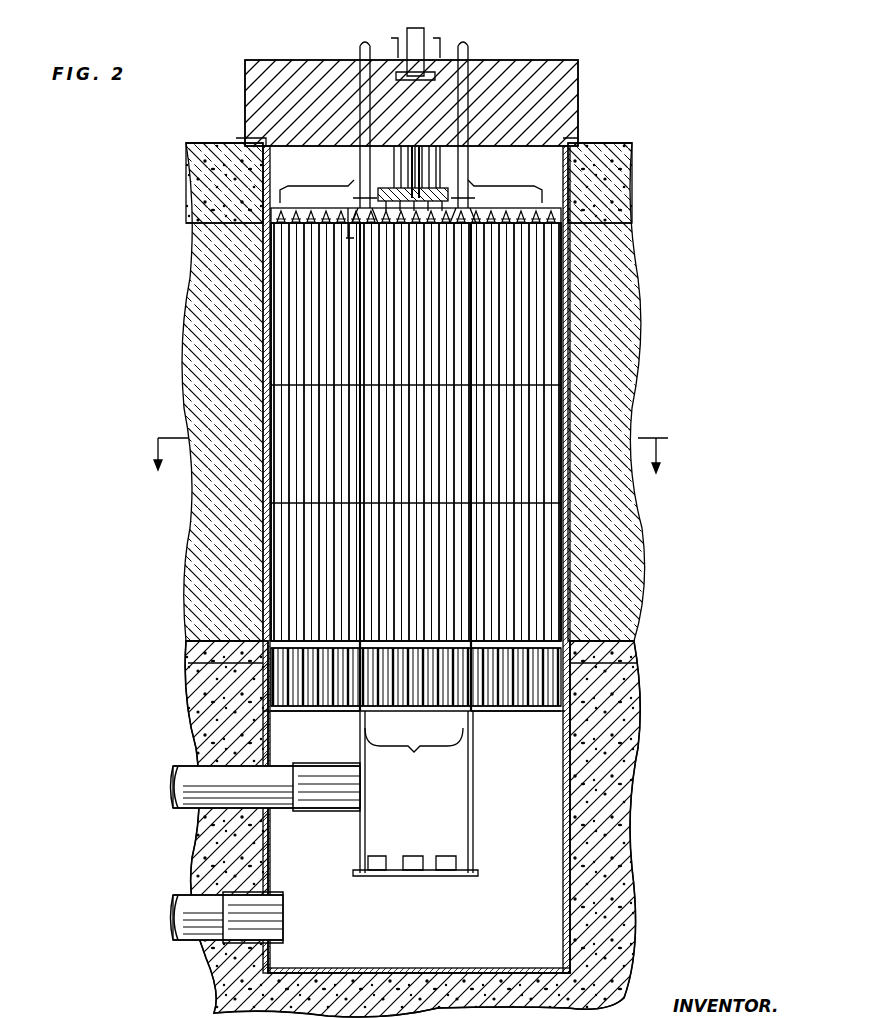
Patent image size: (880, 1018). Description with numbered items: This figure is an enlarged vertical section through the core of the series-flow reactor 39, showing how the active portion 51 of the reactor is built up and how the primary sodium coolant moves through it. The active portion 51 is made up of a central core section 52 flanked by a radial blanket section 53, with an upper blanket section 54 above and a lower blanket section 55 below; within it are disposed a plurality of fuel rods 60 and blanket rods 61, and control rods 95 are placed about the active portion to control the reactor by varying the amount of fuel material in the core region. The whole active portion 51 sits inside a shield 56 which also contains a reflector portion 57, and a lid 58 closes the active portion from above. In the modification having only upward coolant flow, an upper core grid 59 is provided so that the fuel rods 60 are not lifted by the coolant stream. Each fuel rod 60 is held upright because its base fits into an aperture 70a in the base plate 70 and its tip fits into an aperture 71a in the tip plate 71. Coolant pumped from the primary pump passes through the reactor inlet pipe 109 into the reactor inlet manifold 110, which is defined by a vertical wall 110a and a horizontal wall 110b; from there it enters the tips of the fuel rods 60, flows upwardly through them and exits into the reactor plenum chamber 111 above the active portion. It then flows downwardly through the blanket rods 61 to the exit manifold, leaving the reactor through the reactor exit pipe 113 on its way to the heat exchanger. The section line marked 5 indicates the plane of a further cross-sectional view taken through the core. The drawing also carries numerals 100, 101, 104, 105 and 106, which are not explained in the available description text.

The reactor 39 is at (610, 106).
The active portion 51 is at (545, 284).
The core section 52 is at (450, 397).
The radial blanket section 53 is at (314, 439).
The upper blanket section 54 is at (418, 322).
The lower blanket section 55 is at (420, 562).
The shield 56 is at (196, 178).
The reflector portion 57 is at (195, 292).
The lid 58 is at (498, 56).
The upper core grid 59 is at (440, 185).
The fuel rods 60 is at (414, 748).
The blanket rods 61 is at (320, 154).
The base plate 70 is at (262, 636).
The aperture 70a is at (262, 645).
The tip plate 71 is at (492, 704).
The aperture 71a is at (262, 670).
The control rods 95 is at (340, 225).
The control rod guide tubes 100 is at (357, 36).
The control rod plate 101 is at (455, 200).
The lower reflector columns 104 is at (355, 652).
The central reflector columns 105 is at (370, 706).
The support blocks 106 is at (440, 864).
The reactor inlet pipe 109 is at (185, 760).
The reactor inlet manifold 110 is at (464, 835).
The vertical wall 110a is at (462, 803).
The horizontal wall 110b is at (368, 864).
The reactor plenum chamber 111 is at (540, 164).
The reactor exit pipe 113 is at (188, 886).
The section line 5- 5 is at (414, 452).